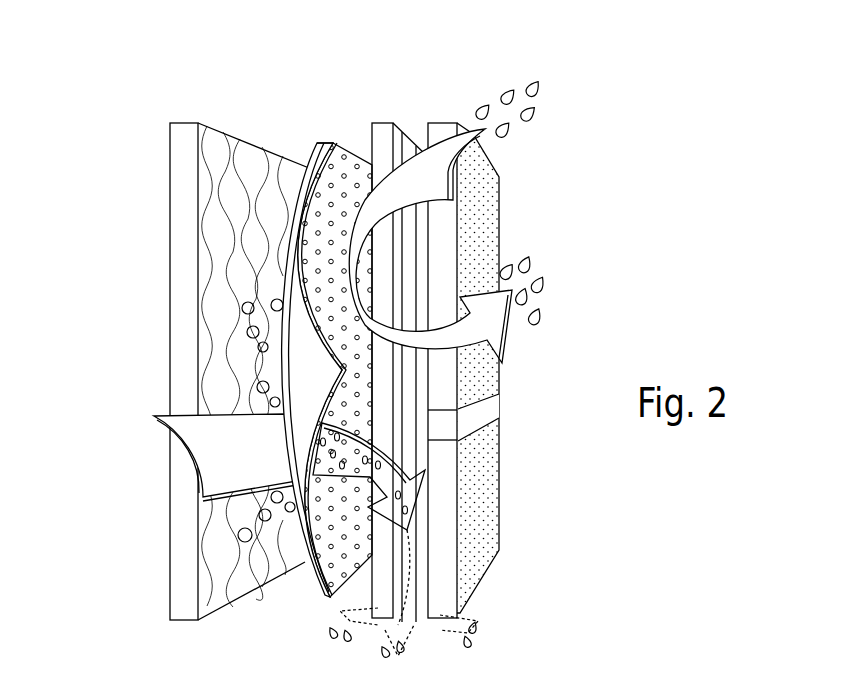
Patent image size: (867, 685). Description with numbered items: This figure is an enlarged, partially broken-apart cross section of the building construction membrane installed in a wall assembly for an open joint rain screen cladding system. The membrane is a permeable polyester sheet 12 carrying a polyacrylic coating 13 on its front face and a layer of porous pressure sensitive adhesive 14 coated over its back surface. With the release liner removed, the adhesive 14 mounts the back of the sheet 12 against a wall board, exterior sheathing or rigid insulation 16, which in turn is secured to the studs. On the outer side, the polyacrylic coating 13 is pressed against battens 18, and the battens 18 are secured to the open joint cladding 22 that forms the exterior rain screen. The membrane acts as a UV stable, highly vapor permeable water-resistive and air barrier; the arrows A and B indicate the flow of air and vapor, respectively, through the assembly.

The sheet 12 is at (318, 145).
The polyacrylic coating 13 is at (338, 192).
The porous pressure sensitive adhesive 14 is at (300, 372).
The wall board or exterior sheathing or rigid insulation 16 is at (192, 305).
The battens 18 is at (390, 124).
The open joint cladding 22 is at (488, 237).
The arrow A is at (223, 453).
The arrow B is at (440, 179).